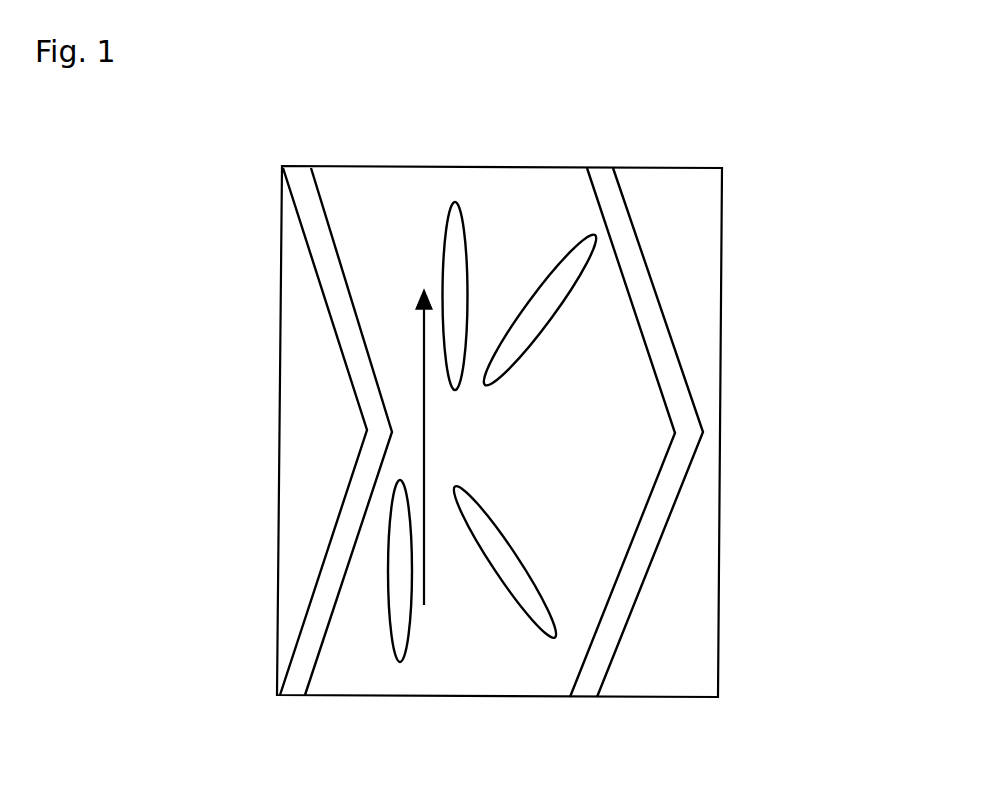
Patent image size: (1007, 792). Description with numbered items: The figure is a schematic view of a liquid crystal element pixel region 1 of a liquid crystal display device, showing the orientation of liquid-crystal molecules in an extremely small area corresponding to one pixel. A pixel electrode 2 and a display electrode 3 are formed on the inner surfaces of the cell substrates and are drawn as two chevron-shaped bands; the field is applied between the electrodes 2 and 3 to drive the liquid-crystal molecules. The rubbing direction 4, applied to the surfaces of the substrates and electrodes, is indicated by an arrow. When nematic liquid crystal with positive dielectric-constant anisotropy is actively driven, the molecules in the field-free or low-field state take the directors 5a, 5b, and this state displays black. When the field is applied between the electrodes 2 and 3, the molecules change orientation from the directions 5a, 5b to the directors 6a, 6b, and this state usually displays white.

The liquid crystal element pixel region 1 is at (722, 203).
The pixel electrode 2 is at (648, 278).
The display electrode 3 is at (357, 491).
The rubbing direction 4 is at (413, 373).
The director of liquid crystal compound in a black state 5a is at (455, 260).
The director of liquid crystal compound in a black state 5b is at (398, 592).
The director of liquid crystal compound in a white state 6a is at (528, 340).
The director of liquid crystal compound in a white state 6b is at (515, 555).